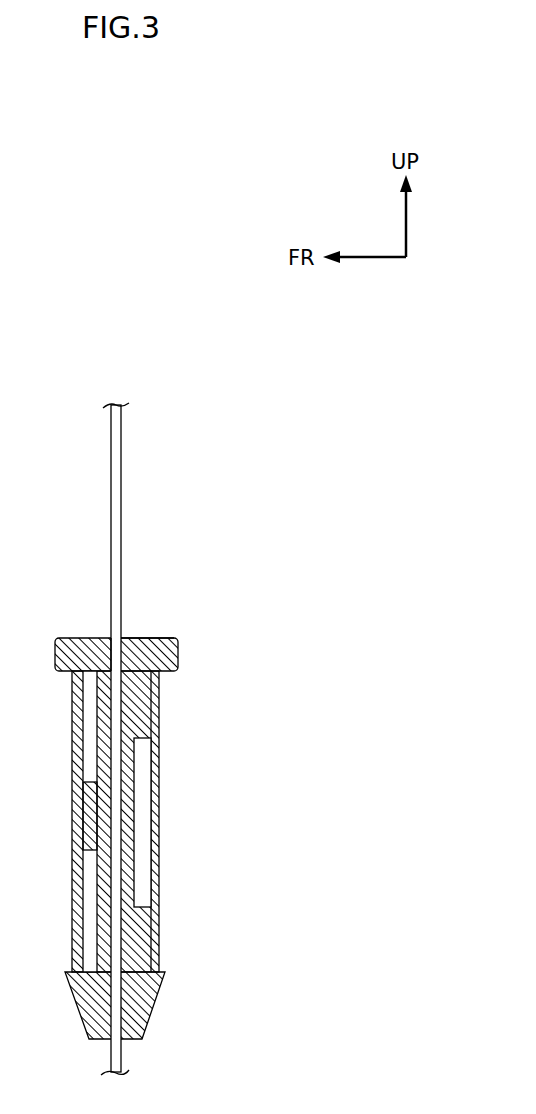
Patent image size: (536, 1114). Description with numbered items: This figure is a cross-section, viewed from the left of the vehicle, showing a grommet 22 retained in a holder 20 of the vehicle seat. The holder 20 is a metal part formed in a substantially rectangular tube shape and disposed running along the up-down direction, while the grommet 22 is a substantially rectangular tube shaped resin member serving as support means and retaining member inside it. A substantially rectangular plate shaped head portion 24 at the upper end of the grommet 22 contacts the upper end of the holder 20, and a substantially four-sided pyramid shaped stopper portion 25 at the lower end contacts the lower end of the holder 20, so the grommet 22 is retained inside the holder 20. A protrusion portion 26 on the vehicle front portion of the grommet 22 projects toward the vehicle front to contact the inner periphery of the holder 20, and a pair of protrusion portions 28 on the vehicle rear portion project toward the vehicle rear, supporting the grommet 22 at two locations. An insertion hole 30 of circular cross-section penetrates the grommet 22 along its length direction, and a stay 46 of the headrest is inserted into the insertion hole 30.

The holder 20 is at (159, 820).
The grommet 22 is at (155, 616).
The head portion 24 is at (155, 640).
The stopper portion 25 is at (150, 1000).
The protrusion portion 26 is at (83, 856).
The protrusion portion 28 is at (159, 757).
The insertion hole 30 is at (113, 640).
The stay 46 is at (122, 468).